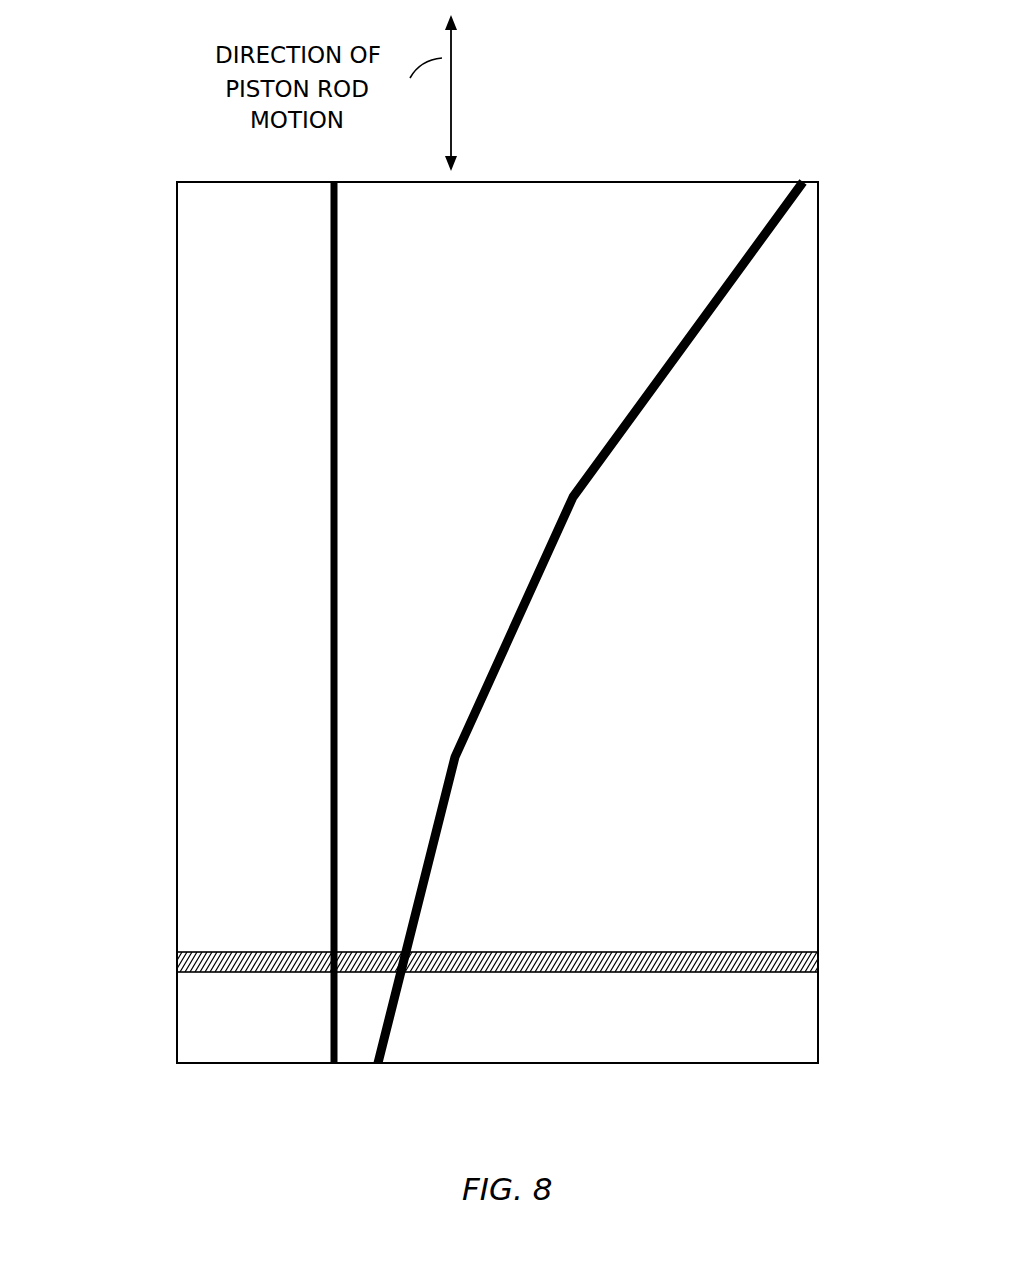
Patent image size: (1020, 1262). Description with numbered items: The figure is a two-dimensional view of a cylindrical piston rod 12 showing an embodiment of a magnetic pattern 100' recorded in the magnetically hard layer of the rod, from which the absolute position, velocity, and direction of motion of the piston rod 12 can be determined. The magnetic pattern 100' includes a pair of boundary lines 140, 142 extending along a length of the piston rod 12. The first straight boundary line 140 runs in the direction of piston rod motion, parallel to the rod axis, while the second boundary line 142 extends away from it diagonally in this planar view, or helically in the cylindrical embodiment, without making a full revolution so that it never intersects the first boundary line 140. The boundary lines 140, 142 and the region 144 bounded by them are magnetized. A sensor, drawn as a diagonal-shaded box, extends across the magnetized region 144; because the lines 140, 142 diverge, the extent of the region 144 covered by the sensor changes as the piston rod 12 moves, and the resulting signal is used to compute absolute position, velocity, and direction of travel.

The magnetic pattern 100' is at (82, 189).
The piston rod 12 is at (818, 327).
The first straight boundary line 140 is at (330, 283).
The second boundary line 142 is at (587, 492).
The magnetized region 144 is at (482, 435).